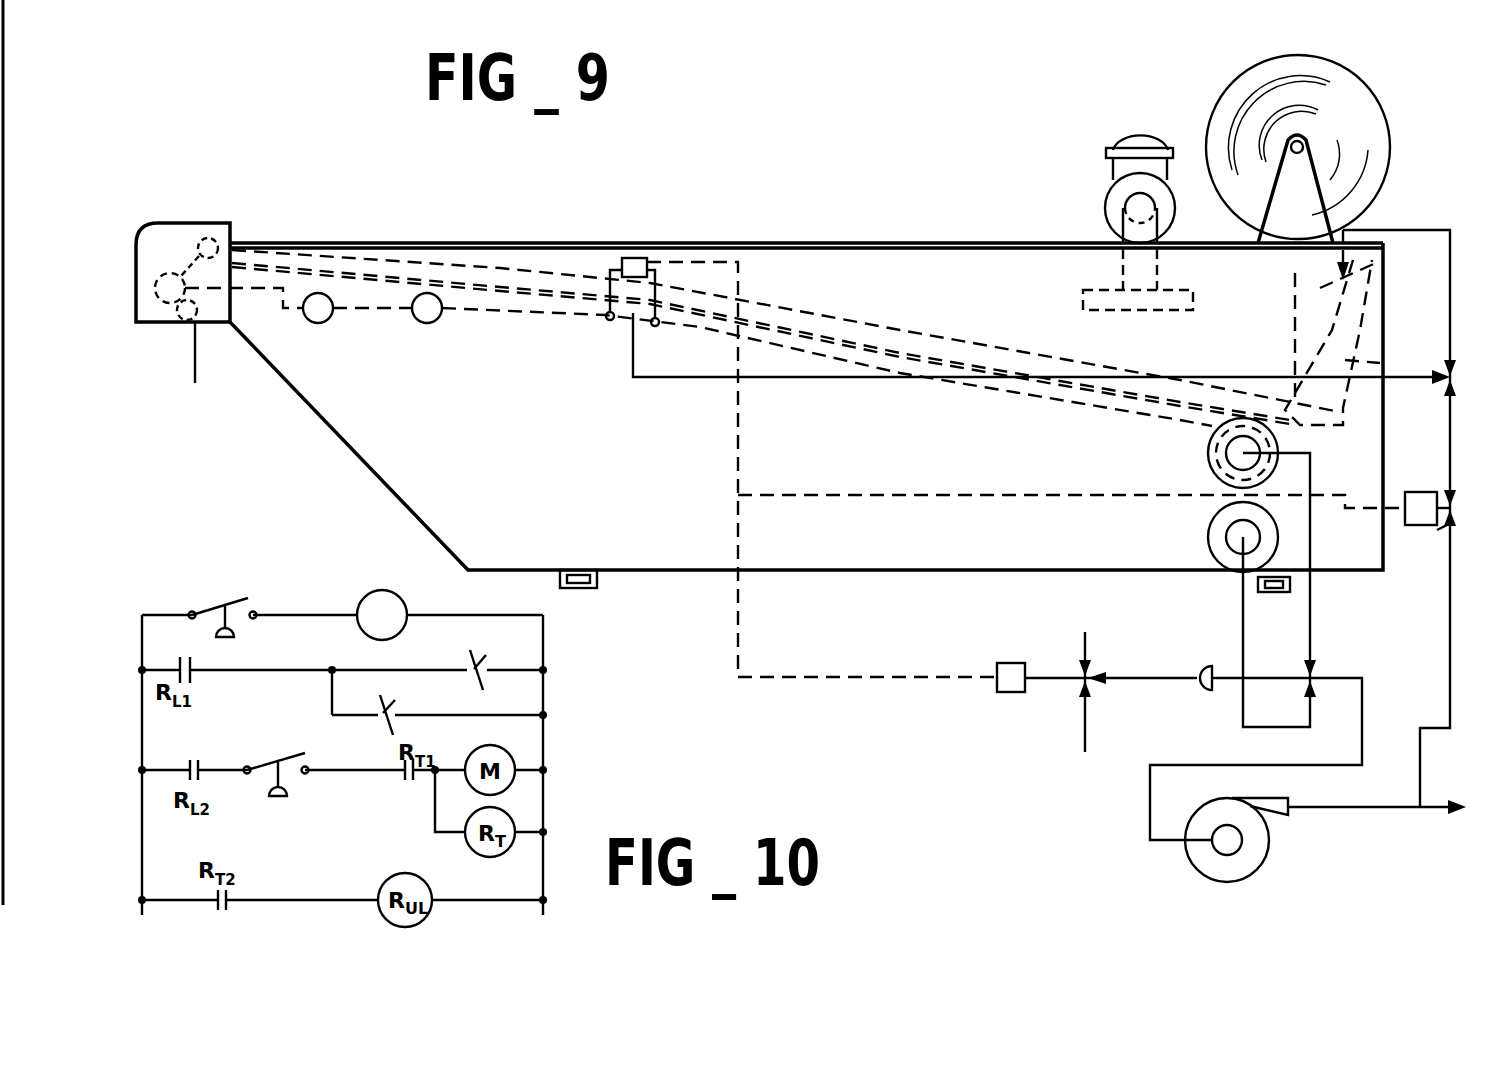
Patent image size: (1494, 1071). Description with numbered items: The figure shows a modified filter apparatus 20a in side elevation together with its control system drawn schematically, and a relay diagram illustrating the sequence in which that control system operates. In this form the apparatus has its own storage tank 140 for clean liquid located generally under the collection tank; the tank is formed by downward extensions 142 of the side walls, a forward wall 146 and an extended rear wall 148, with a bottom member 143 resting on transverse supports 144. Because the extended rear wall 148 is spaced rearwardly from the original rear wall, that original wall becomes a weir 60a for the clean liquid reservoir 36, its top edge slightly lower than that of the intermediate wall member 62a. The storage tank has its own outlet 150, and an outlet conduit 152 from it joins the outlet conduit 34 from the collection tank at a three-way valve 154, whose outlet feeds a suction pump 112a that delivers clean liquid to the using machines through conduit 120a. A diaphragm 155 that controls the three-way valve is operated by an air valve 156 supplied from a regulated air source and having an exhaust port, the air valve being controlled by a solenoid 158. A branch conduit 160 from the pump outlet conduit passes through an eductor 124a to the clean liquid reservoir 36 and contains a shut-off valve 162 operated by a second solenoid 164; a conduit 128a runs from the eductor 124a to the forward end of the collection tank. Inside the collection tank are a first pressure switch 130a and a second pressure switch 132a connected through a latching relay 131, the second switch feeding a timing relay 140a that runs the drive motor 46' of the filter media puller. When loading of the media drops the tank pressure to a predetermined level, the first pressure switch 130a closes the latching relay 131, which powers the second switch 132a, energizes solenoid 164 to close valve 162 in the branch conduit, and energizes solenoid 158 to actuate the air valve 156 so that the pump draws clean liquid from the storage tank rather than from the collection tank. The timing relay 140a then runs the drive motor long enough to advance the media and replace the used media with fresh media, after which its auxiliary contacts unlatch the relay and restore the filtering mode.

In FIG. 9, the filter apparatus 20a is at (815, 224).
In FIG. 9, the latching relay 131 is at (635, 258).
In FIG. 10, the latching relay 131 is at (378, 591).
In FIG. 9, the sensor 46' is at (317, 333).
In FIG. 9, the timing relay 140a is at (427, 325).
In FIG. 9, the second pressure switch 132a is at (606, 320).
In FIG. 10, the second pressure switch 132a is at (303, 757).
In FIG. 9, the first pressure switch 130a is at (658, 326).
In FIG. 10, the first pressure switch 130a is at (227, 604).
In FIG. 9, the conduit 128a is at (790, 377).
In FIG. 9, the clean liquid reservoir 36 is at (1318, 171).
In FIG. 9, the extended rear wall 148 is at (1392, 303).
In FIG. 9, the intermediate wall member 62a is at (1295, 318).
In FIG. 9, the weir 60a is at (1384, 367).
In FIG. 9, the eductor 124a is at (1445, 383).
In FIG. 9, the outlet conduit 34 is at (1298, 452).
In FIG. 9, the solenoid 164 is at (1424, 492).
In FIG. 10, the solenoid 164 is at (461, 707).
In FIG. 9, the shut-off valve 162 is at (1447, 526).
In FIG. 9, the outlet 150 is at (1208, 533).
In FIG. 9, the forward wall 146 is at (340, 435).
In FIG. 9, the downward extensions 142 is at (588, 518).
In FIG. 9, the transverse supports 144 is at (597, 588).
In FIG. 9, the storage tank 140 is at (781, 540).
In FIG. 9, the bottom member 143 is at (942, 572).
In FIG. 9, the solenoid 158 is at (1000, 692).
In FIG. 10, the solenoid 158 is at (506, 659).
In FIG. 9, the air valve 156 is at (1082, 684).
In FIG. 9, the diaphragm 155 is at (1203, 690).
In FIG. 9, the three-way valve 154 is at (1318, 672).
In FIG. 9, the outlet conduit 152 is at (1258, 727).
In FIG. 9, the branch conduit 160 is at (1445, 632).
In FIG. 9, the suction pump 112a is at (1190, 858).
In FIG. 9, the conduit 120a is at (1362, 810).